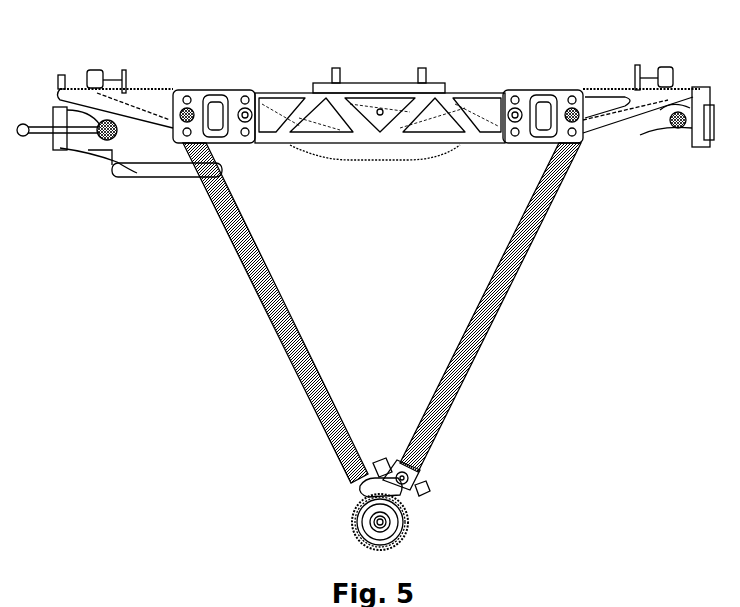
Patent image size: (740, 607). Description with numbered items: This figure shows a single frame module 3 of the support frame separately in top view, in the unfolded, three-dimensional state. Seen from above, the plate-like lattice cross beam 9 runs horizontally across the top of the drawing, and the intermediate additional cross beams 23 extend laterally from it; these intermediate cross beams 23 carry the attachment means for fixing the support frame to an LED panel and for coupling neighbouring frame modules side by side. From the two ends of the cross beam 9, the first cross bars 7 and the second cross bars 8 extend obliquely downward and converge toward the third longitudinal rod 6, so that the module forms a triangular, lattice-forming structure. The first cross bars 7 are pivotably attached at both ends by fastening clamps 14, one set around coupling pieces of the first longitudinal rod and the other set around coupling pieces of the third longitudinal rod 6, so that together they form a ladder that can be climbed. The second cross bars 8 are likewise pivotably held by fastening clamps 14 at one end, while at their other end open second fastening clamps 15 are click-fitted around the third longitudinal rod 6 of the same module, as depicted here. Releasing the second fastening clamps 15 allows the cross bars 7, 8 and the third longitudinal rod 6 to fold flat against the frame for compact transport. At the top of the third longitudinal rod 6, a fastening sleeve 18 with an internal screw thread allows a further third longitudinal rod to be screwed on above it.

The frame module 3 is at (206, 391).
The third longitudinal rod 6 is at (362, 523).
The first cross bars 7 is at (267, 310).
The second cross bars 8 is at (490, 303).
The cross beam 9 is at (278, 90).
The fastening clamps 14 is at (362, 492).
The second fastening clamps 15 is at (407, 480).
The fastening sleeve 18 is at (408, 528).
The additional cross beams 23 is at (148, 90).